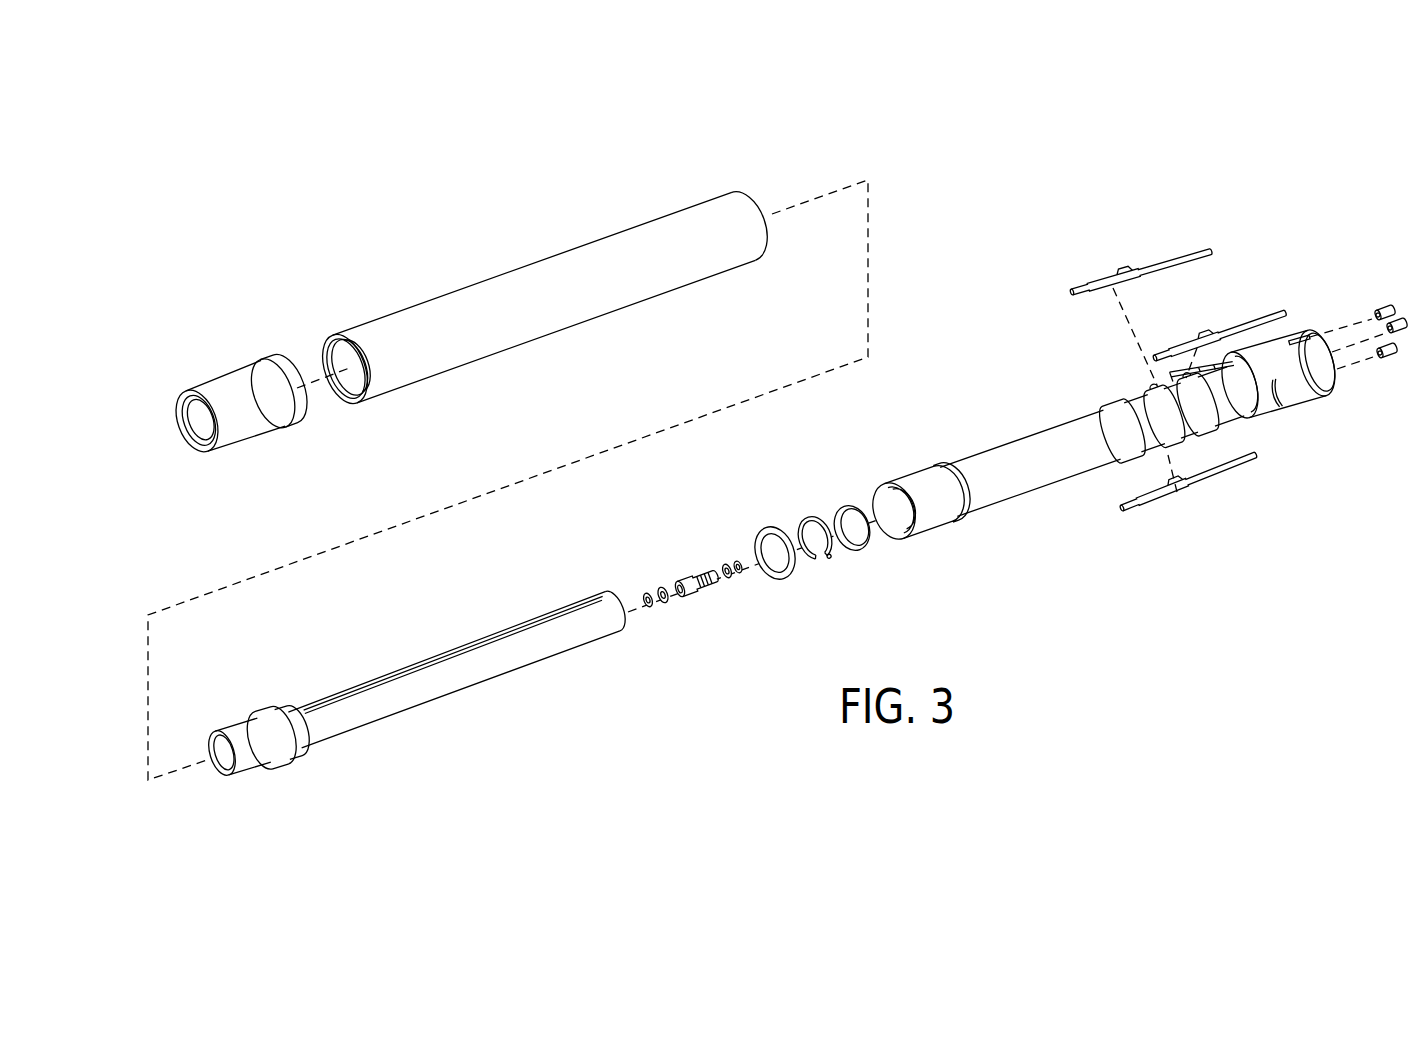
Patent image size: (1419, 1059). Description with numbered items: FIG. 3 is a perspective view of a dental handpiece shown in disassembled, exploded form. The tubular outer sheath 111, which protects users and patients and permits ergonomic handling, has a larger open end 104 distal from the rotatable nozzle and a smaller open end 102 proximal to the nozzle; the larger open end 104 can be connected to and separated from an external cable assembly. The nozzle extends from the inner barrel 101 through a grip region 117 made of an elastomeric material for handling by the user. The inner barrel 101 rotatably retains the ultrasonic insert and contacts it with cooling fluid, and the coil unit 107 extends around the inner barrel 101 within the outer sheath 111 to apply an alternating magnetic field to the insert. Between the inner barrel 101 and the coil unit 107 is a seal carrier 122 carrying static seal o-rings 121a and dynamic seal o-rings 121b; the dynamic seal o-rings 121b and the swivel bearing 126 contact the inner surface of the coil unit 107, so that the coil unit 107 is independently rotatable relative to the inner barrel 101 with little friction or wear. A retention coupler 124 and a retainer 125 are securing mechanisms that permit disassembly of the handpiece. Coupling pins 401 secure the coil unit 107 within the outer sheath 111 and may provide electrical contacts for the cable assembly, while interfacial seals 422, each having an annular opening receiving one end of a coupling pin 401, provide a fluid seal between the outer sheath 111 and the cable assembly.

The inner barrel 101 is at (401, 667).
The smaller open end 102 is at (338, 404).
The larger open end 104 is at (748, 200).
The coil unit 107 is at (980, 458).
The outer sheath 111 is at (515, 266).
The grip region 117 is at (222, 378).
The static seal o-rings 121a is at (661, 587).
The dynamic seal o-rings 121b is at (737, 560).
The seal carrier 122 is at (698, 598).
The retention coupler 124 is at (777, 581).
The retainer 125 is at (805, 518).
The swivel bearing 126 is at (850, 503).
The coupling pins 401 is at (1153, 266).
The interfacial seals 422 is at (1385, 303).